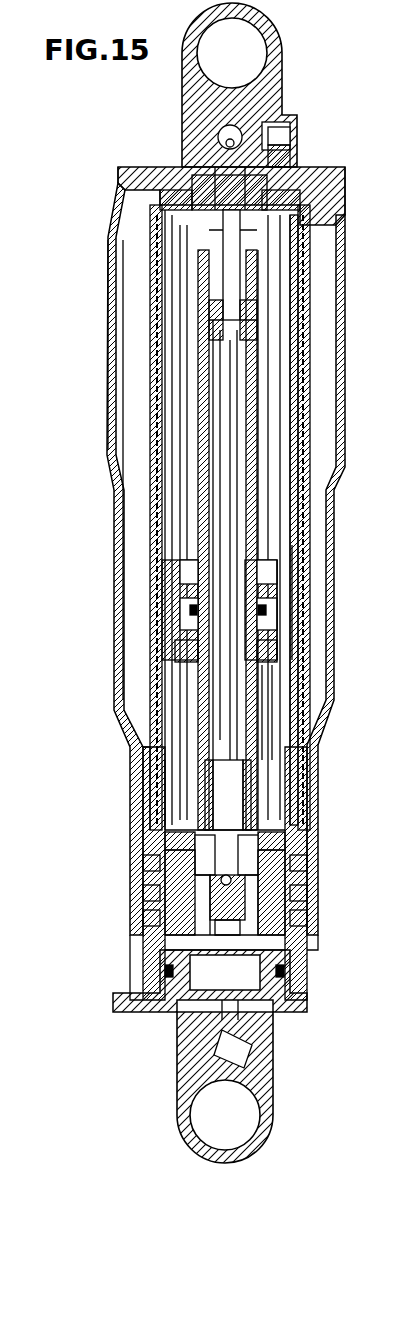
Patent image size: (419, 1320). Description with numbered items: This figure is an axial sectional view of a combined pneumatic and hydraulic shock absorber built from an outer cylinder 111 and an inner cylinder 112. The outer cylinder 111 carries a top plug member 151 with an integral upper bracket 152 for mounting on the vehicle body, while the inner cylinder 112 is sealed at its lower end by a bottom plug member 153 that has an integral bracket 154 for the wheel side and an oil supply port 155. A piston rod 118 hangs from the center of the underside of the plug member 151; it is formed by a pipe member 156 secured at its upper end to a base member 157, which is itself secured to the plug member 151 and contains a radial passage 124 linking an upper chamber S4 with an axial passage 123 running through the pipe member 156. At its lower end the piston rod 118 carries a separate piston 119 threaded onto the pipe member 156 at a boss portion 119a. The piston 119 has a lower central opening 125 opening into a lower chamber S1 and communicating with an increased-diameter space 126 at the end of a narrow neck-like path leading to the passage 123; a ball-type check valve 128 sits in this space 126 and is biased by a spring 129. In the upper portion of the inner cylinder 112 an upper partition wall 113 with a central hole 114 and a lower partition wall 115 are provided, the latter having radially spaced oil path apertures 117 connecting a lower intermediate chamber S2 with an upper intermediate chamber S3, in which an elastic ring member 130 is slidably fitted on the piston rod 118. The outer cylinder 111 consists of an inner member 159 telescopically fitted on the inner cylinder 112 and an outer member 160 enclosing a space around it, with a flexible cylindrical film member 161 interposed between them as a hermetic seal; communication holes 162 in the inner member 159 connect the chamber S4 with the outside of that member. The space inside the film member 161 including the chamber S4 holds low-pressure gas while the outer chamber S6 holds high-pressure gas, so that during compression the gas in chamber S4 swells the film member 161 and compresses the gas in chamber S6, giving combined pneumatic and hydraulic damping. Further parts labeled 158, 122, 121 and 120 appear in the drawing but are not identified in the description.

The upper bracket 152 is at (280, 44).
The top plug member 151 is at (305, 168).
The base member 157 is at (318, 178).
The radial passage 124 is at (247, 233).
The piston rod 118 is at (266, 326).
The communication holes 162 is at (162, 305).
The outer member 160 is at (108, 352).
The upper chamber S4 is at (175, 362).
The axial passage 123 is at (232, 372).
The chamber S6 is at (128, 422).
The pipe member 156 is at (255, 400).
The inner member 159 is at (160, 475).
The central hole 114 is at (250, 590).
The upper partition wall 113 is at (275, 556).
The cylindrical film member 161 is at (147, 545).
The outer cylinder 111 is at (346, 580).
The elastic ring member 130 is at (195, 618).
The upper intermediate chamber S3 is at (272, 608).
The lower partition wall 115 is at (272, 640).
The lower intermediate chamber S2 is at (270, 690).
The oil path apertures 117 is at (150, 695).
The boss portion 119a is at (240, 770).
The seal 158 is at (225, 836).
The inner cylinder 112 is at (180, 812).
The valve seat 122 is at (265, 840).
The seal ring 121 is at (305, 860).
The piston 119 is at (205, 828).
The check valve 128 is at (280, 890).
The lower central opening 125 is at (215, 925).
The valve member 120 is at (250, 905).
The spring 129 is at (225, 938).
The increased-diameter space 126 is at (250, 920).
The lower chamber S1 is at (250, 945).
The bottom plug member 153 is at (285, 1040).
The oil supply port 155 is at (230, 1022).
The bracket 154 is at (268, 1108).